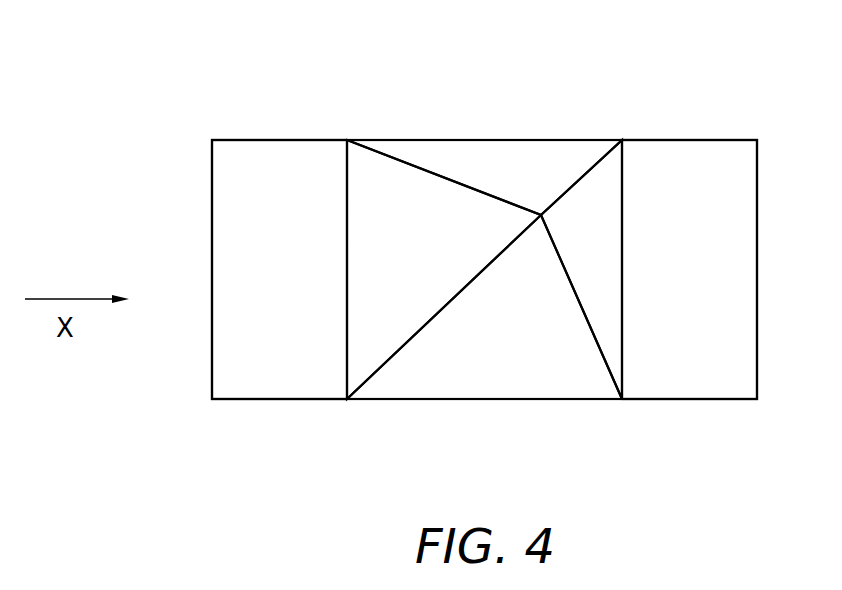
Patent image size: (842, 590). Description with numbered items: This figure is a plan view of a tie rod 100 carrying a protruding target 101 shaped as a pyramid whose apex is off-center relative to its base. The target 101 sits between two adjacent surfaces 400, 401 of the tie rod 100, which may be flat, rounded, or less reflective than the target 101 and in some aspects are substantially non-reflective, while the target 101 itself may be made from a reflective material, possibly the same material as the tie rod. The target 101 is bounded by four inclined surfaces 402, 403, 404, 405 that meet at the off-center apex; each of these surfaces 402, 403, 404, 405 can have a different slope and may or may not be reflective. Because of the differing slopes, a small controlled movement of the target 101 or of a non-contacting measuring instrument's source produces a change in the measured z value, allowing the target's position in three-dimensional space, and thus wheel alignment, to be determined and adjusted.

The tie rod 100 is at (243, 48).
The target 101 is at (505, 139).
The surface 400 is at (290, 286).
The surface 401 is at (702, 286).
The inclined surface 402 is at (424, 286).
The inclined surface 403 is at (606, 239).
The inclined surface 404 is at (540, 179).
The inclined surface 405 is at (540, 362).